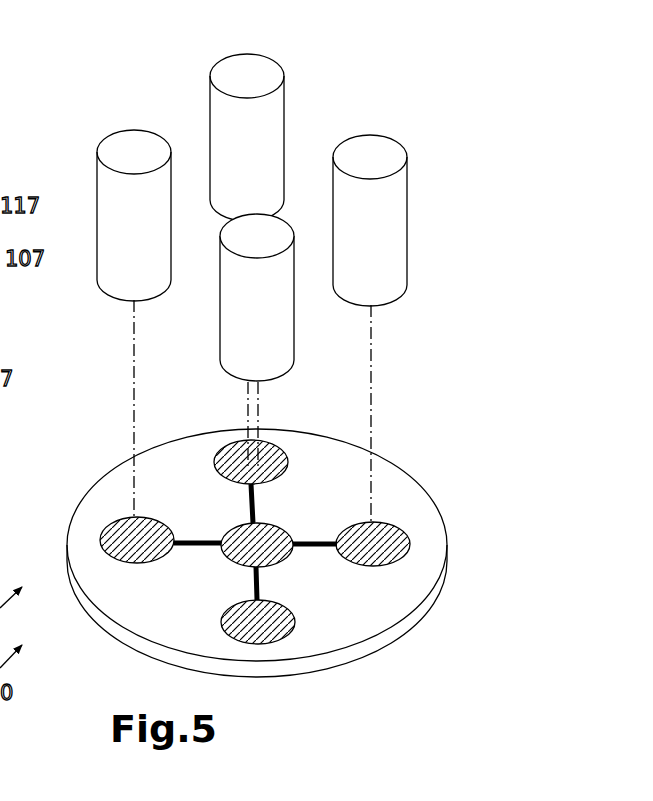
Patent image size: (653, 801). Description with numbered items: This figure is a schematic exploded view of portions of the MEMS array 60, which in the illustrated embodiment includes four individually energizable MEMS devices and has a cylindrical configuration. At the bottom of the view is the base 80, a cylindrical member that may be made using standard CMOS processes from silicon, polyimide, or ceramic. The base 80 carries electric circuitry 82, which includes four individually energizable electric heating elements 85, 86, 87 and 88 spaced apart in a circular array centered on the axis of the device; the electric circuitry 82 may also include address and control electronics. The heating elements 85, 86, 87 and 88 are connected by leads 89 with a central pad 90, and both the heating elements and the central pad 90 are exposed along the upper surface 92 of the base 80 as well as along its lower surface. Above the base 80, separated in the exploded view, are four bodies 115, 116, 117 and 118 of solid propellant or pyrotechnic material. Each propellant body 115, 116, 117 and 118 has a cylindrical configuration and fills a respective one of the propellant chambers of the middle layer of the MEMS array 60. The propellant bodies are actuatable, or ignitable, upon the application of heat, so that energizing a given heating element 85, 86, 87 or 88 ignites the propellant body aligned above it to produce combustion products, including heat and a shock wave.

The MEMS array 60 is at (118, 403).
The base 80 is at (148, 620).
The electric circuitry 82 is at (148, 588).
The electric heating element 85 is at (100, 540).
The electric heating element 86 is at (226, 448).
The electric heating element 87 is at (365, 536).
The electric heating element 88 is at (290, 620).
The leads 89 is at (254, 578).
The central pad 90 is at (262, 524).
The upper surface 92 is at (160, 468).
The propellant body 115 is at (113, 131).
The propellant body 116 is at (252, 55).
The propellant body 117 is at (372, 134).
The propellant body 118 is at (296, 324).